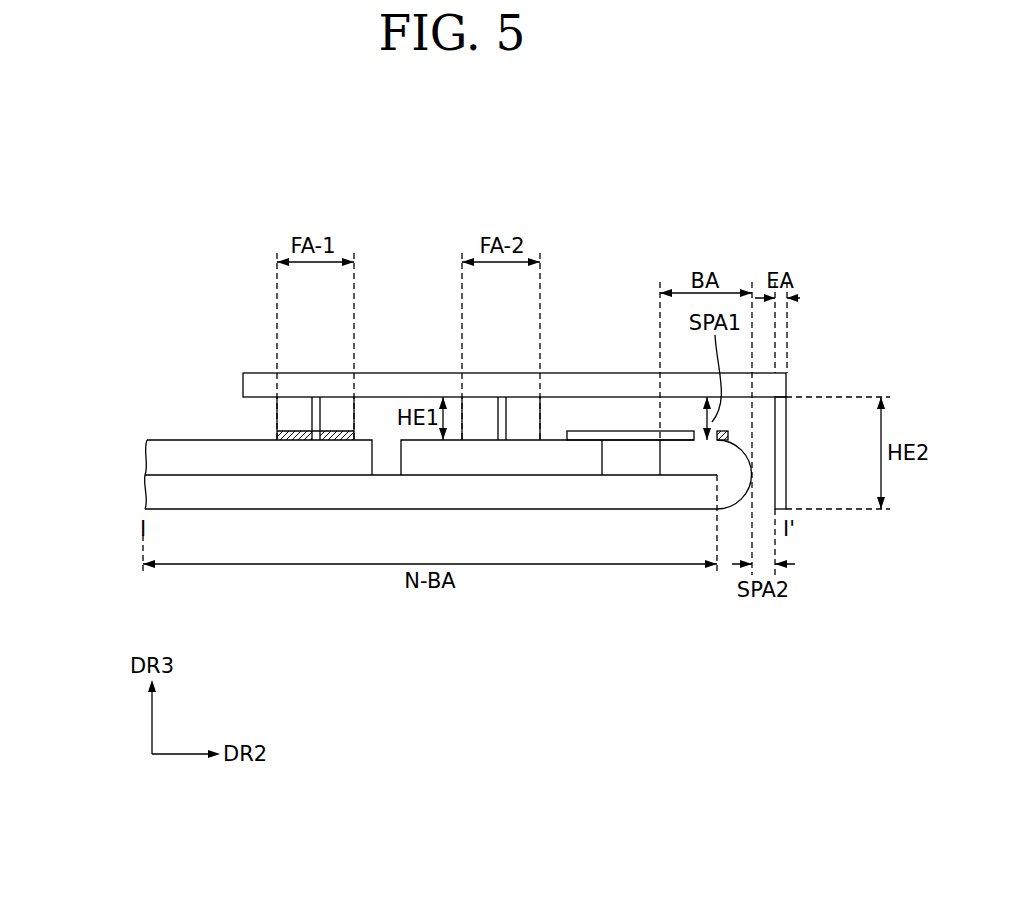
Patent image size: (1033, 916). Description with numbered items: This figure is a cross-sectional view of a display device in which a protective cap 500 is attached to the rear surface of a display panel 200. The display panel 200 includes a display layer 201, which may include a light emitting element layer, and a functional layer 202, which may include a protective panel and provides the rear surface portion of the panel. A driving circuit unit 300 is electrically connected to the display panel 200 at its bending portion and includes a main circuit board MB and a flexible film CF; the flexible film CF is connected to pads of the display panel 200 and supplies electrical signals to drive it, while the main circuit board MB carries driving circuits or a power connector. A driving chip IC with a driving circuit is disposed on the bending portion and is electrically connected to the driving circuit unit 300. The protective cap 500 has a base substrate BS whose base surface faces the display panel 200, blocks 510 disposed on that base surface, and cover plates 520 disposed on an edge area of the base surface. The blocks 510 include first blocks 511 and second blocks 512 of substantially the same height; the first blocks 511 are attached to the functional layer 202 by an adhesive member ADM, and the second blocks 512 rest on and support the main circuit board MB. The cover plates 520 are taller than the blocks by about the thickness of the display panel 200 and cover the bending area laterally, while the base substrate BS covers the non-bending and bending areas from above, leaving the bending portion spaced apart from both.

The protective cap 500 is at (777, 207).
The blocks 510 is at (290, 310).
The first blocks 511 is at (293, 403).
The second blocks 512 is at (486, 403).
The driving circuit unit 300 is at (645, 310).
The display panel 200 is at (62, 440).
The functional layer 202 is at (150, 458).
The display layer 201 is at (150, 493).
The cover plates 520 is at (781, 473).
The base substrate BS is at (252, 385).
The adhesive member ADM is at (277, 437).
The main circuit board MB is at (552, 450).
The flexible film CF is at (627, 437).
The driving chip IC is at (728, 432).